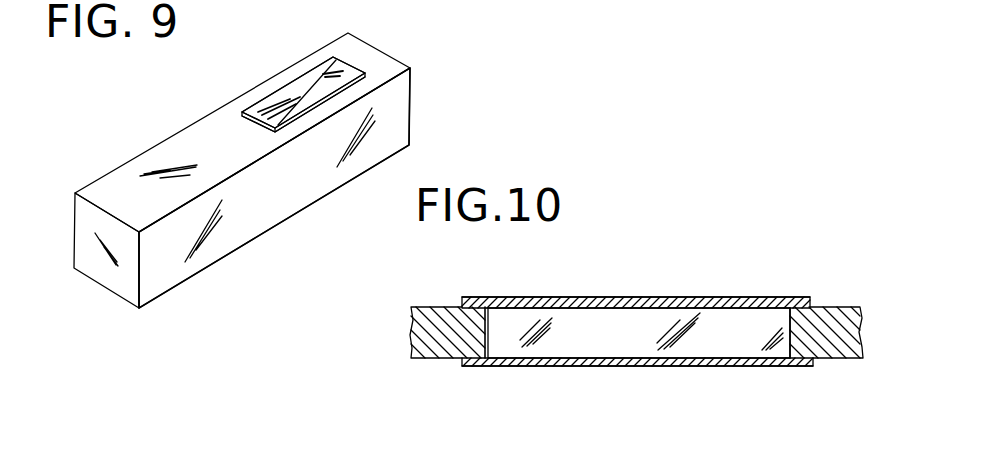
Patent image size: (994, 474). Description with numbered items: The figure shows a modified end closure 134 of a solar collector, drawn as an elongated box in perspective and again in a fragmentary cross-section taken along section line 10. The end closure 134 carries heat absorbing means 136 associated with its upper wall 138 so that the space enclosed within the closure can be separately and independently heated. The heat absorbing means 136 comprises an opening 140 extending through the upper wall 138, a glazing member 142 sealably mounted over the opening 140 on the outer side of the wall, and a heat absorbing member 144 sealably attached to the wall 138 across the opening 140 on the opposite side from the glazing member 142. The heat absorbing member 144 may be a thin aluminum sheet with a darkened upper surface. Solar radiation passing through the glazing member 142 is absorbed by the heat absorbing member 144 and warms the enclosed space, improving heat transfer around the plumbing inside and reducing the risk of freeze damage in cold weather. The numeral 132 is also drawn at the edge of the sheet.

In FIG. 9, the section line 10 is at (345, 5).
In FIG. 9, the window assembly 132 is at (503, 0).
In FIG. 9, the end closure 134 is at (416, 126).
In FIG. 9, the heat absorbing means 136 is at (246, 124).
In FIG. 10, the heat absorbing means 136 is at (739, 264).
In FIG. 9, the upper wall 138 is at (113, 185).
In FIG. 10, the upper wall 138 is at (842, 353).
In FIG. 10, the opening 140 is at (633, 345).
In FIG. 9, the glazing member 142 is at (300, 93).
In FIG. 10, the glazing member 142 is at (580, 298).
In FIG. 10, the heat absorbing member 144 is at (520, 367).